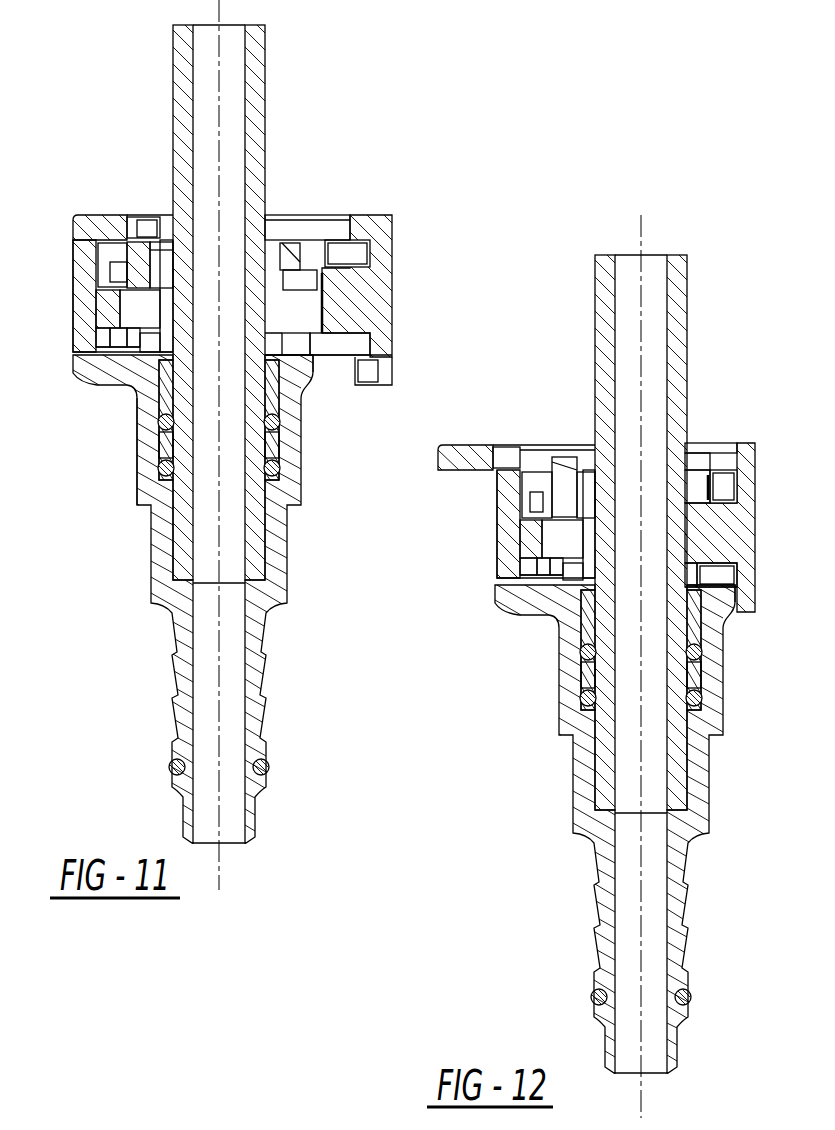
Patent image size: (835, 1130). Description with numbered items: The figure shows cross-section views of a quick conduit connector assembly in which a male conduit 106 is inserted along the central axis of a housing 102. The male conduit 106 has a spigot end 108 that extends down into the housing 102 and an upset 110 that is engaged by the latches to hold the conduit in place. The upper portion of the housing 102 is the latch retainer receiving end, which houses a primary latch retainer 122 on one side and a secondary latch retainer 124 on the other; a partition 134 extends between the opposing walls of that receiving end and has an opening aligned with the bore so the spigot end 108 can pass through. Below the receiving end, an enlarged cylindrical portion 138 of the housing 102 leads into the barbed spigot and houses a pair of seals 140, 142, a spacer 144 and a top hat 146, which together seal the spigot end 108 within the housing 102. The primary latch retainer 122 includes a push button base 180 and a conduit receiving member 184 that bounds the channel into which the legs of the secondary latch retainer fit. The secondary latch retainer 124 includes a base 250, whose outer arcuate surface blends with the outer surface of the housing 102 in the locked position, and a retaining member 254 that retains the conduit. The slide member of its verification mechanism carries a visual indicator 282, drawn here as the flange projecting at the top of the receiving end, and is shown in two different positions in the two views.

In FIG. 12, the housing 102 is at (644, 640).
In FIG. 11, the male conduit 106 is at (178, 77).
In FIG. 12, the male conduit 106 is at (690, 295).
In FIG. 11, the spigot end 108 is at (258, 545).
In FIG. 12, the spigot end 108 is at (680, 700).
In FIG. 11, the upset 110 is at (272, 355).
In FIG. 12, the upset 110 is at (697, 580).
In FIG. 11, the primary latch retainer 122 is at (97, 248).
In FIG. 12, the primary latch retainer 122 is at (507, 485).
In FIG. 11, the secondary latch retainer 124 is at (375, 251).
In FIG. 12, the secondary latch retainer 124 is at (741, 474).
In FIG. 11, the partition 134 is at (297, 265).
In FIG. 11, the enlarged cylindrical portion 138 is at (142, 498).
In FIG. 11, the seal 140 is at (158, 475).
In FIG. 11, the seal 142 is at (160, 445).
In FIG. 11, the spacer 144 is at (160, 466).
In FIG. 11, the top hat 146 is at (158, 421).
In FIG. 11, the push button base 180 is at (75, 318).
In FIG. 12, the push button base 180 is at (495, 553).
In FIG. 11, the conduit receiving member 184 is at (312, 309).
In FIG. 11, the base 250 is at (388, 258).
In FIG. 12, the base 250 is at (723, 486).
In FIG. 11, the retaining member 254 is at (340, 294).
In FIG. 12, the retaining member 254 is at (697, 525).
In FIG. 11, the visual indicator 282 is at (98, 230).
In FIG. 12, the visual indicator 282 is at (468, 446).